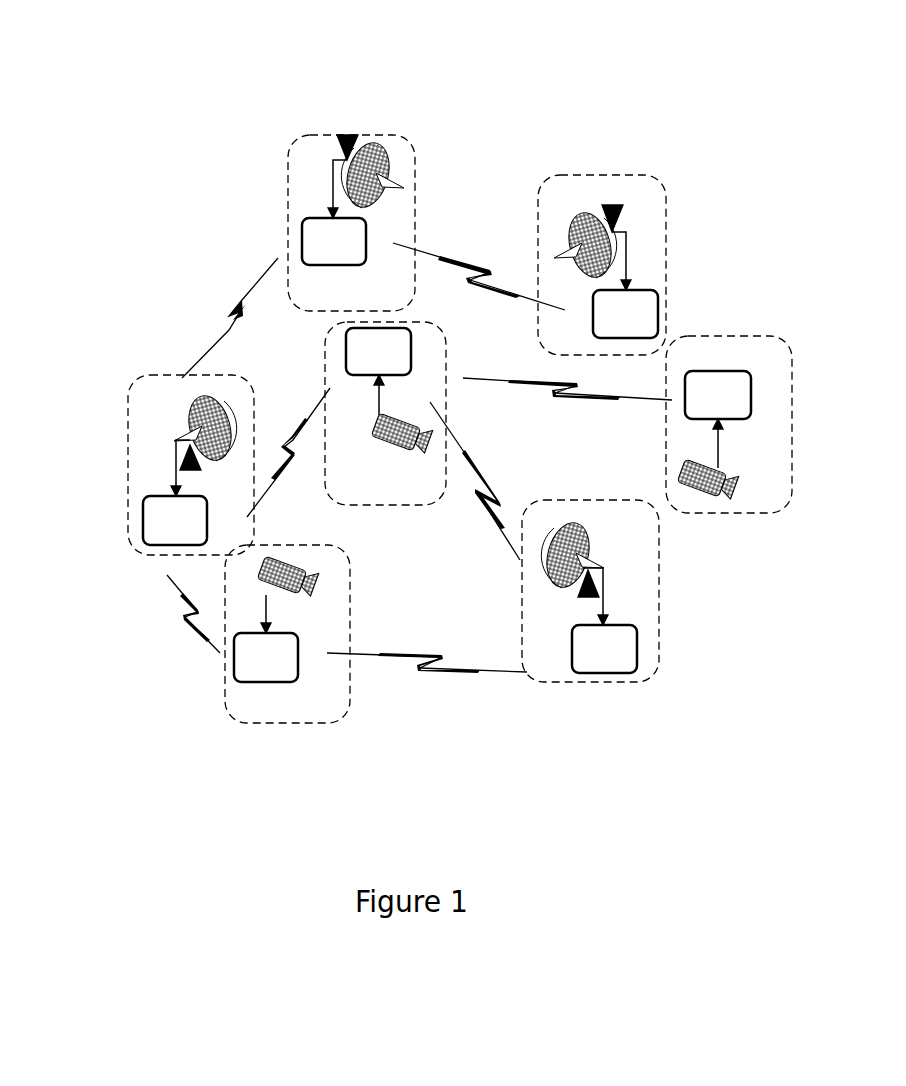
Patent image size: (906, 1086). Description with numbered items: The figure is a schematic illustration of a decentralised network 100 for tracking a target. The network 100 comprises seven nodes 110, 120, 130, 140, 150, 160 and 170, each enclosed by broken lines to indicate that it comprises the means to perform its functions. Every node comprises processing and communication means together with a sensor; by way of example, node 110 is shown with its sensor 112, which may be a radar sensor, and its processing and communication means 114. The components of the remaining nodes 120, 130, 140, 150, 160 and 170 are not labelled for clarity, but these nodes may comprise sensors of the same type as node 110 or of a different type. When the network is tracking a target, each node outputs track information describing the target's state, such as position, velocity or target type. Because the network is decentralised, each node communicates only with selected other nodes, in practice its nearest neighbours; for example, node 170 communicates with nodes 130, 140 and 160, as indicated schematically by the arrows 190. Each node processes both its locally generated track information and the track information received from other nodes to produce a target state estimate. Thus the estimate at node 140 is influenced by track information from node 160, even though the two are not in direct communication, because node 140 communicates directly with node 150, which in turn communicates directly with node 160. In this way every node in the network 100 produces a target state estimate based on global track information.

The network 100 is at (648, 67).
The node 110 is at (366, 133).
The sensor 112 is at (376, 170).
The processing and communication means 114 is at (325, 232).
The node 120 is at (656, 175).
The node 130 is at (741, 334).
The node 140 is at (659, 597).
The node 150 is at (315, 688).
The node 160 is at (128, 430).
The node 170 is at (385, 507).
The arrows 190 is at (558, 432).